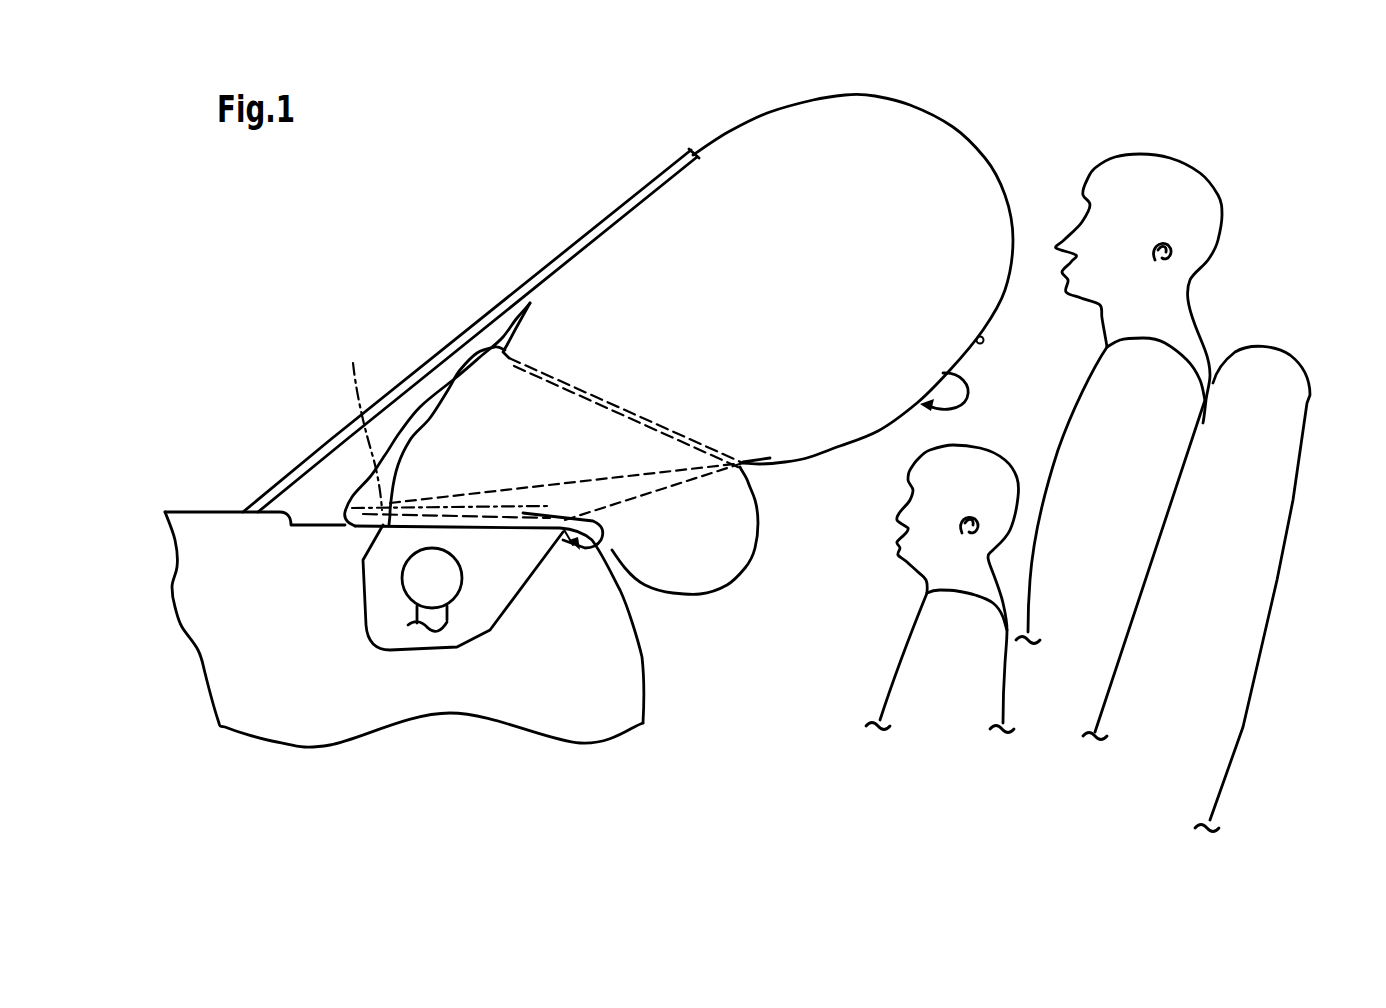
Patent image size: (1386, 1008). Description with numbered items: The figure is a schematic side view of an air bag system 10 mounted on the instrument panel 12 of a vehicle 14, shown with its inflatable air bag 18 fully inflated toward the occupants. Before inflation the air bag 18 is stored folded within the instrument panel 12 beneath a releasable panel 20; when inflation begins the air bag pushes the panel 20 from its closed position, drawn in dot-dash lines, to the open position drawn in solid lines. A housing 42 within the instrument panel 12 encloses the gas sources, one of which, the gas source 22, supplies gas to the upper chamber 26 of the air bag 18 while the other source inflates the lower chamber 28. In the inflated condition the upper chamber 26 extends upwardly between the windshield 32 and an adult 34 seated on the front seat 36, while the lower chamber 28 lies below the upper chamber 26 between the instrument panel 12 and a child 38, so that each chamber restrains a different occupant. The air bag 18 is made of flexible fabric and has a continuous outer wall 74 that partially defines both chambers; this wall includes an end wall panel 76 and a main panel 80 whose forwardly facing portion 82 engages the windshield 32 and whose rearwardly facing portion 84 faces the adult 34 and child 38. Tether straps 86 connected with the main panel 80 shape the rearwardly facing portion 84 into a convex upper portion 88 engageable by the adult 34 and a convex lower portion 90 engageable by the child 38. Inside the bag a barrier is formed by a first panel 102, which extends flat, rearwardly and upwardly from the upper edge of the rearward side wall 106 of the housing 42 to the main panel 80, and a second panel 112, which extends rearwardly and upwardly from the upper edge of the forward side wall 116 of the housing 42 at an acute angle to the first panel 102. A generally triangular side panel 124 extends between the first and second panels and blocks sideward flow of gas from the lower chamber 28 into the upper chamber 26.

The air bag system 10 is at (946, 86).
The instrument panel 12 is at (647, 682).
The vehicle 14 is at (210, 503).
The inflatable air bag 18 is at (858, 90).
The releasable panel 20 is at (420, 404).
The gas source 22 is at (420, 592).
The upper chamber 26 is at (782, 180).
The lower chamber 28 is at (687, 567).
The windshield 32 is at (613, 210).
The adult 34 is at (1140, 425).
The front seat 36 is at (1273, 500).
The child 38 is at (923, 680).
The housing 42 is at (374, 646).
The outer wall 74 is at (797, 460).
The end wall panel 76 is at (938, 217).
The main panel 80 is at (953, 127).
The forwardly facing portion 82 is at (527, 290).
The rearwardly facing portion 84 is at (945, 374).
The tether straps 86 is at (603, 407).
The convex upper portion 88 is at (985, 330).
The convex lower portion 90 is at (758, 545).
The first panel 102 is at (642, 502).
The rearward side wall 106 is at (518, 548).
The second panel 112 is at (530, 487).
The forward side wall 116 is at (363, 582).
The side panel 124 is at (587, 503).